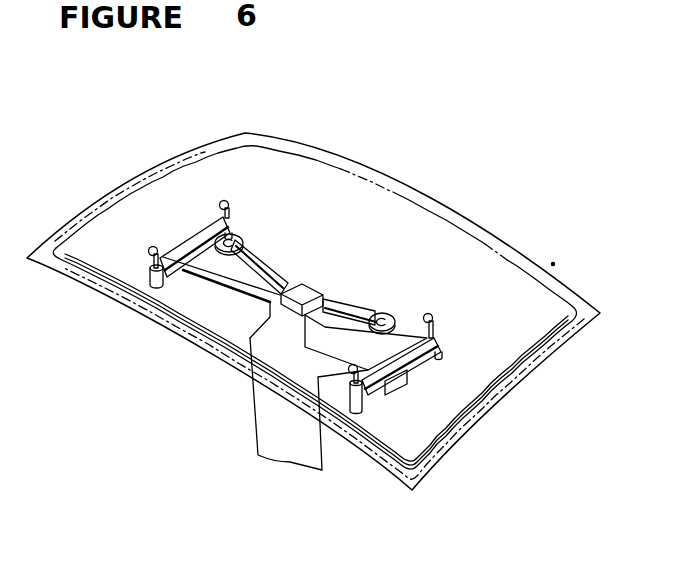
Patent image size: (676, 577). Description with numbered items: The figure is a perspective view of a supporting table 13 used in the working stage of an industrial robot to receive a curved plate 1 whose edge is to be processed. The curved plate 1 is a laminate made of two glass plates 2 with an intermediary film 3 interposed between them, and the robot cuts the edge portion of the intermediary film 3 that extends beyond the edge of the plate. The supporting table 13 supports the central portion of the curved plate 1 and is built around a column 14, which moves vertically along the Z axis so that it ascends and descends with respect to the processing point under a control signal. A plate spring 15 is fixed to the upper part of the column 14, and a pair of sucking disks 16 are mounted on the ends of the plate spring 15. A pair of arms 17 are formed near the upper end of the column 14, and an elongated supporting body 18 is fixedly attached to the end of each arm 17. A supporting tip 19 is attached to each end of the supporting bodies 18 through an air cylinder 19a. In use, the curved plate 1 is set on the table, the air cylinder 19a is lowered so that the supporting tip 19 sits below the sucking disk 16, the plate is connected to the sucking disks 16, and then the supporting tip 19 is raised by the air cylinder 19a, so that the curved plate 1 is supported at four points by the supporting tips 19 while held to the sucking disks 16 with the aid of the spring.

The curved plate 1 is at (392, 178).
The glass plate 2 is at (452, 215).
The intermediary film 3 is at (554, 262).
The supporting table 13 is at (218, 365).
The column 14 is at (265, 404).
The plate spring 15 is at (338, 298).
The sucking disk 16 is at (232, 236).
The arm 17 is at (213, 298).
The supporting body 18 is at (197, 240).
The supporting tip 19 is at (153, 248).
The air cylinder 19a is at (155, 282).